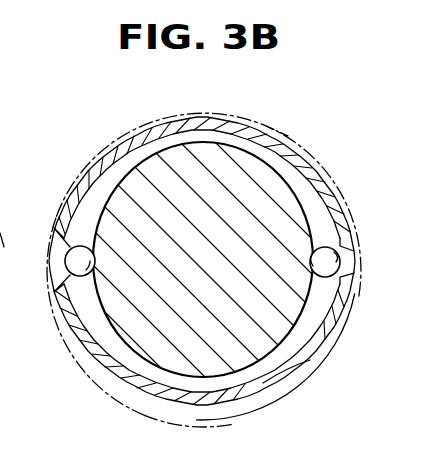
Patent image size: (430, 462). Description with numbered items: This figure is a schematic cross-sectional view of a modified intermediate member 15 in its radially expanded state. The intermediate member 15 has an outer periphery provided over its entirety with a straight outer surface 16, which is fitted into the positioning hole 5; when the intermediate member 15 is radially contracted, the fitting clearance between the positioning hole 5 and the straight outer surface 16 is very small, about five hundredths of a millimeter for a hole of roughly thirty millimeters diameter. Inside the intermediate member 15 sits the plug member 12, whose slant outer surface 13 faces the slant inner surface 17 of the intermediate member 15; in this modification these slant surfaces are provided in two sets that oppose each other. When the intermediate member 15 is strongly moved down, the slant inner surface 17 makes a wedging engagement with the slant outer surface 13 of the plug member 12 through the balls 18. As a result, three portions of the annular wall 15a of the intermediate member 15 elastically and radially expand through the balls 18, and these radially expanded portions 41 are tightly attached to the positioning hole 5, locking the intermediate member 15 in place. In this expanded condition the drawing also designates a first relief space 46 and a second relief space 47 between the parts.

The positioning hole 5 is at (117, 394).
The plug member 12 is at (118, 177).
The slant outer surface 13 is at (315, 268).
The intermediate member 15 is at (332, 182).
The annular wall 15a is at (257, 124).
The straight outer surface 16 is at (312, 372).
The slant inner surface 17 is at (340, 247).
The ball 18 is at (341, 266).
The radially expanded portion 41 is at (68, 247).
The first relief space 46 is at (207, 417).
The second relief space 47 is at (215, 114).